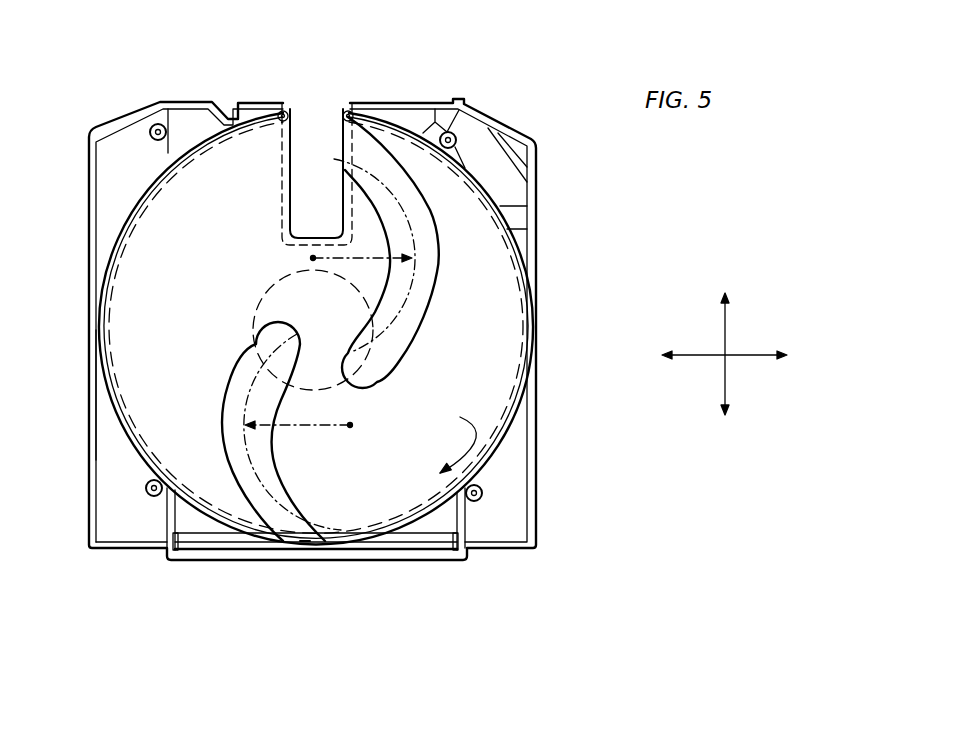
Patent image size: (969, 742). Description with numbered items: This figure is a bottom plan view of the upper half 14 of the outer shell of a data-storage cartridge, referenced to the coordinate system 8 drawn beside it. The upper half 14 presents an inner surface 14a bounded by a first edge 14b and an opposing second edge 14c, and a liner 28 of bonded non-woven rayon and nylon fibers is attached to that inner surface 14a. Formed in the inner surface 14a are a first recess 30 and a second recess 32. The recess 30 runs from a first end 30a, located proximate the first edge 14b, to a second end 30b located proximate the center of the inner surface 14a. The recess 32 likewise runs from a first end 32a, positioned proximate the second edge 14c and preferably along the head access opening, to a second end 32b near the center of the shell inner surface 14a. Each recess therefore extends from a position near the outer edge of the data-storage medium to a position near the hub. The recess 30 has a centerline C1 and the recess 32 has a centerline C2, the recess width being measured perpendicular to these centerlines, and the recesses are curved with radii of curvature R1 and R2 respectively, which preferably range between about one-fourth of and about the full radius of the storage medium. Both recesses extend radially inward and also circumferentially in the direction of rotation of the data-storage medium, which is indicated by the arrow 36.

The coordinate system 8 is at (723, 353).
The upper half 14 is at (542, 138).
The inner surface 14a is at (160, 282).
The first edge 14b is at (360, 565).
The second edge 14c is at (270, 105).
The liner 28 is at (275, 288).
The first recess 30 is at (210, 439).
The first end 30a is at (313, 540).
The second end 30b is at (277, 318).
The second recess 32 is at (443, 320).
The first end 32a is at (342, 140).
The second end 32b is at (366, 389).
The arrow 36 is at (453, 441).
The centerline C1 is at (253, 387).
The centerline C2 is at (405, 218).
The radius of curvature R1 is at (283, 427).
The radius of curvature R2 is at (365, 262).